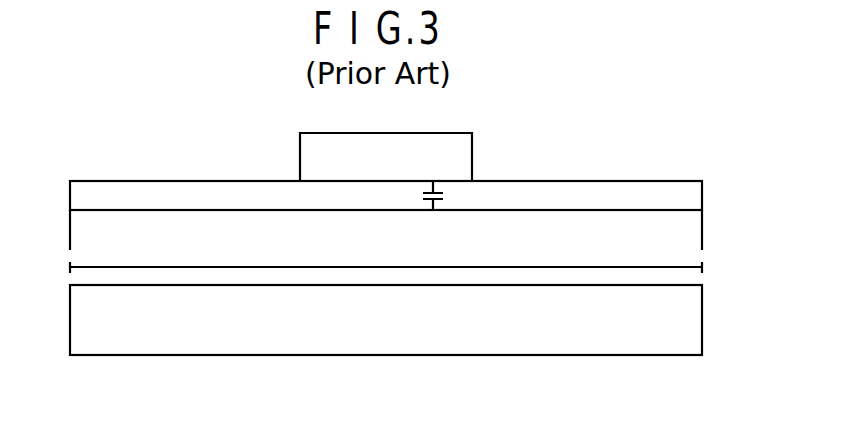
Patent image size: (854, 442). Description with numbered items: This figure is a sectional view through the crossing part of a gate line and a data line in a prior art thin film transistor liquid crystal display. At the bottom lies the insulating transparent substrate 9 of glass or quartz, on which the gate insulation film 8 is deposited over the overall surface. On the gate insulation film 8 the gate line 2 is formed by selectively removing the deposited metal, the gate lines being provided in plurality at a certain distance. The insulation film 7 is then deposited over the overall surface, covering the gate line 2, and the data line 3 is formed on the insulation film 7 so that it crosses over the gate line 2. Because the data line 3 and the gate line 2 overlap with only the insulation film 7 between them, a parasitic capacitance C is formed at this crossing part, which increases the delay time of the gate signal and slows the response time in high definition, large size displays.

The data line 3 is at (455, 153).
The insulation film 7 is at (688, 197).
The parasitic capacitance C is at (443, 197).
The gate line 2 is at (688, 239).
The gate insulation film 8 is at (688, 279).
The insulating transparent substrate 9 is at (688, 319).